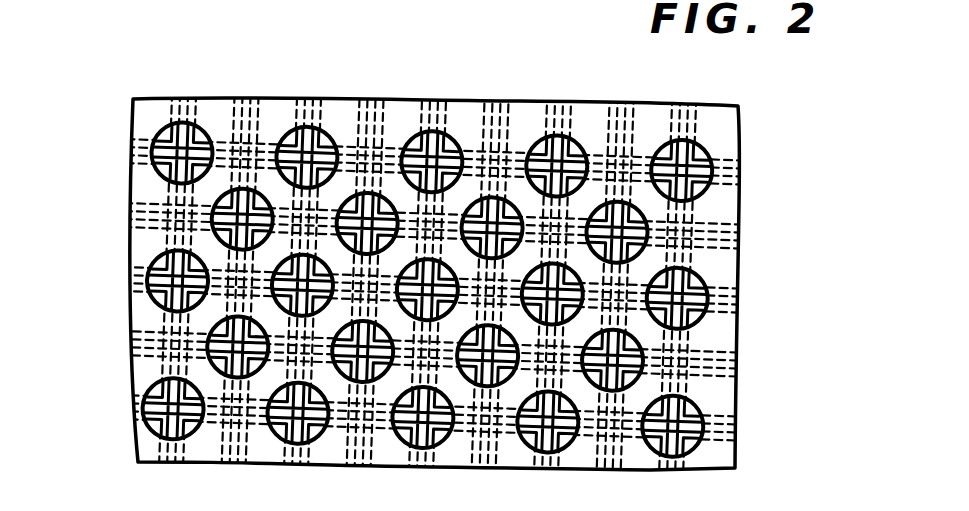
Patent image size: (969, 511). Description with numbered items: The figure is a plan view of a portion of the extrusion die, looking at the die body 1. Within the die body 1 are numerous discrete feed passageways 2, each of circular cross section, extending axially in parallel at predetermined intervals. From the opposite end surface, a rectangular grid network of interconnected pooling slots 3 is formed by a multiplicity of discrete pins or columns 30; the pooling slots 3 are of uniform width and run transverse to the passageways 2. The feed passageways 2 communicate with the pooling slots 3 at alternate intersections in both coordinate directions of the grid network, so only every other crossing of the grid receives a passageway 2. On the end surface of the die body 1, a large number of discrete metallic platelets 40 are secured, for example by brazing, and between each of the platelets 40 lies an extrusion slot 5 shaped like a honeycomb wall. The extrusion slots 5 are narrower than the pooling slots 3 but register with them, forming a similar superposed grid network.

The die body 1 is at (744, 266).
The feed passageways 2 is at (158, 302).
The pooling slots 3 is at (122, 274).
The extrusion slots 5 is at (633, 456).
The pins or columns 30 is at (586, 172).
The metallic platelets 40 is at (412, 143).